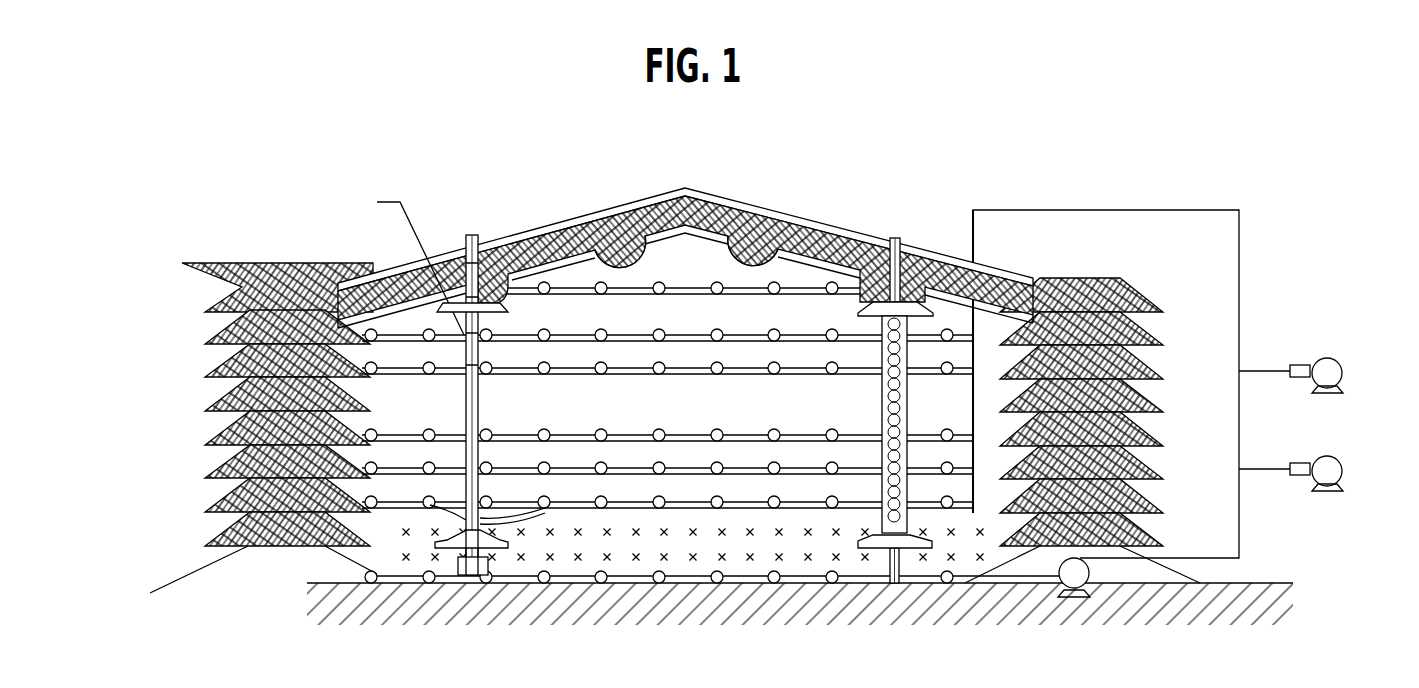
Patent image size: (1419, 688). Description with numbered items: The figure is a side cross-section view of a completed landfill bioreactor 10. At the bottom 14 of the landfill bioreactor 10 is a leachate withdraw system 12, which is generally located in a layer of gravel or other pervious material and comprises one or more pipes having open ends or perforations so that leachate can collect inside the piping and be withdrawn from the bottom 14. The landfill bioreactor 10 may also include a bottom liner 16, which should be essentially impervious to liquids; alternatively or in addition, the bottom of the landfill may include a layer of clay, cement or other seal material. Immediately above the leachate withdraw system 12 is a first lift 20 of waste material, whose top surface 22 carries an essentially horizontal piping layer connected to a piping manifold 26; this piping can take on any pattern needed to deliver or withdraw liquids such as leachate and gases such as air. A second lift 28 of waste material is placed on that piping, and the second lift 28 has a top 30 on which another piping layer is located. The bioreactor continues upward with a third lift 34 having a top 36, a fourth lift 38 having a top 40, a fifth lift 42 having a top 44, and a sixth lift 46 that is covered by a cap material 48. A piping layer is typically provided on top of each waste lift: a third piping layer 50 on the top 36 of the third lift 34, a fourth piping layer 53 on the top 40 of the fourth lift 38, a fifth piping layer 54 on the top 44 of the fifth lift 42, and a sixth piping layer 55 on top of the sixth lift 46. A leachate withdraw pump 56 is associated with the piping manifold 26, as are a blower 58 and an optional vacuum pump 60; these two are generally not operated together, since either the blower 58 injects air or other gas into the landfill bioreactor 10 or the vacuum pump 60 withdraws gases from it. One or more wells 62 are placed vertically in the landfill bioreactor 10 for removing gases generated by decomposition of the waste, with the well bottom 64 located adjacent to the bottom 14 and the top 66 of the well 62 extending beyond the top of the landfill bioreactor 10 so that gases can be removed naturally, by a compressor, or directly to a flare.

The landfill bioreactor 10 is at (683, 265).
The leachate withdraw system 12 is at (770, 580).
The bottom 14 is at (870, 583).
The bottom liner 16 is at (697, 578).
The first lift 20 is at (630, 558).
The top surface 22 is at (578, 508).
The piping manifold 26 is at (1160, 210).
The second lift 28 is at (522, 498).
The top 30 is at (383, 498).
The third lift 34 is at (383, 475).
The top 36 is at (383, 452).
The fourth lift 38 is at (385, 445).
The top 40 is at (387, 410).
The fifth lift 42 is at (367, 262).
The top 44 is at (383, 330).
The sixth lift 46 is at (533, 307).
The cap material 48 is at (588, 232).
The third piping layer 50 is at (965, 437).
The fourth piping layer 53 is at (851, 368).
The fifth piping layer 54 is at (813, 335).
The sixth piping layer 55 is at (793, 288).
The leachate withdraw pump 56 is at (1083, 597).
The blower 58 is at (1343, 472).
The vacuum pump 60 is at (1343, 374).
The well 62 is at (422, 330).
The well bottom 64 is at (930, 547).
The top of well 66 is at (476, 236).